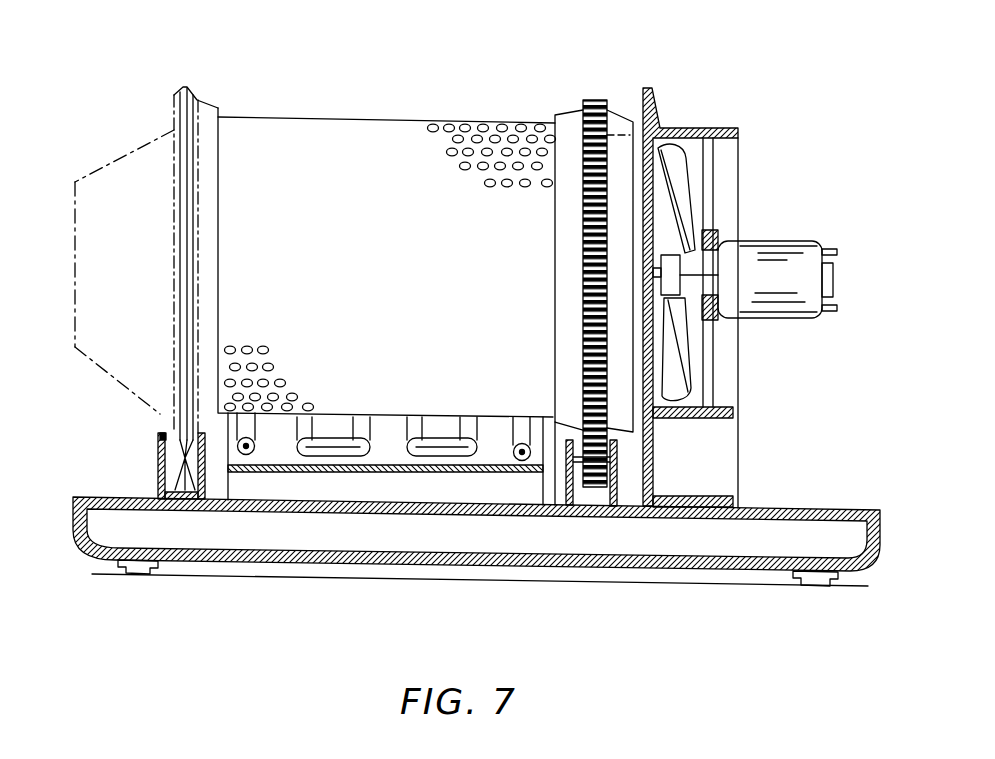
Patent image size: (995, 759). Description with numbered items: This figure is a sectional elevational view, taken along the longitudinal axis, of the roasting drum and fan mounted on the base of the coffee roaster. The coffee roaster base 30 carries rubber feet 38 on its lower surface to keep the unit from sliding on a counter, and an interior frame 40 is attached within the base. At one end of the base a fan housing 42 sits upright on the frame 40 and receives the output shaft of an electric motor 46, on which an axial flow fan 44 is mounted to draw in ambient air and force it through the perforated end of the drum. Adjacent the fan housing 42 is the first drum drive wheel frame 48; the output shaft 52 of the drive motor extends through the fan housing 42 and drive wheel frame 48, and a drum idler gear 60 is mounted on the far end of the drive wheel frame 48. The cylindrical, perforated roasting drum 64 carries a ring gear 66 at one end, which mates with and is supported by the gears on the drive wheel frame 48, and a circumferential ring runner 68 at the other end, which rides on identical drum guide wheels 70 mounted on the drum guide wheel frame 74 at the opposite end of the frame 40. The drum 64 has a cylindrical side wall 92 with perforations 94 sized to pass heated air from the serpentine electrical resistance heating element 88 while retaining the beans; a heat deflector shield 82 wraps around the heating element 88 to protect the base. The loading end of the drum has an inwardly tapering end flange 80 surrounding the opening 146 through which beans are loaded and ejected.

The coffee roaster base 30 is at (92, 551).
The rubber feet 38 is at (140, 575).
The interior frame 40 is at (125, 497).
The fan housing 42 is at (700, 128).
The axial flow fan 44 is at (675, 381).
The electric motor 46 is at (792, 243).
The first drum drive wheel frame 48 is at (565, 488).
The output shaft of electric drive motor 52 is at (696, 232).
The drum idler gear 60 is at (606, 515).
The roasting drum 64 is at (408, 118).
The ring gear 66 is at (597, 100).
The circumferential ring runner 68 is at (188, 88).
The drum guide wheels 70 is at (160, 437).
The drum guide wheel frame 74 is at (158, 466).
The inwardly tapering end flange 80 is at (112, 160).
The heat deflector shield 82 is at (387, 472).
The serpentine electrical resistance heating element 88 is at (405, 445).
The cylindrical side wall 92 is at (337, 117).
The perforations 94 is at (526, 124).
The opening 146 is at (73, 282).